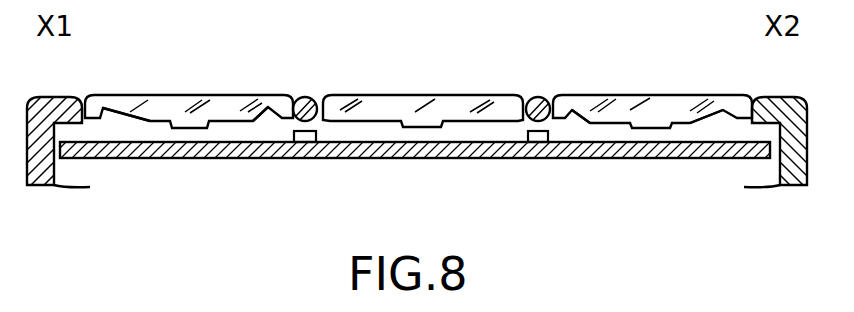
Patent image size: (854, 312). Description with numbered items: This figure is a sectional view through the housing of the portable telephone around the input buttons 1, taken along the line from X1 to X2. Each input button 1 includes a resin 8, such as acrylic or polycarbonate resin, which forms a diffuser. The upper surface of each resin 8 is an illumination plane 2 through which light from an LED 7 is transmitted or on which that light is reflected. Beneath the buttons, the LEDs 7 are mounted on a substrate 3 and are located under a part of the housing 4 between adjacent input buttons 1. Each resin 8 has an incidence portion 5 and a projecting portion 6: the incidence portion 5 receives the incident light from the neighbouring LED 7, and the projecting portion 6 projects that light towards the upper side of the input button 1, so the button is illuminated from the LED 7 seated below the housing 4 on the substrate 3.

The input button 1 is at (418, 116).
The illumination plane 2 is at (160, 95).
The substrate 3 is at (423, 158).
The housing 4 is at (66, 97).
The incidence portion 5 is at (268, 123).
The projecting portion 6 is at (122, 123).
The LED 7 is at (308, 143).
The resin 8 is at (228, 104).